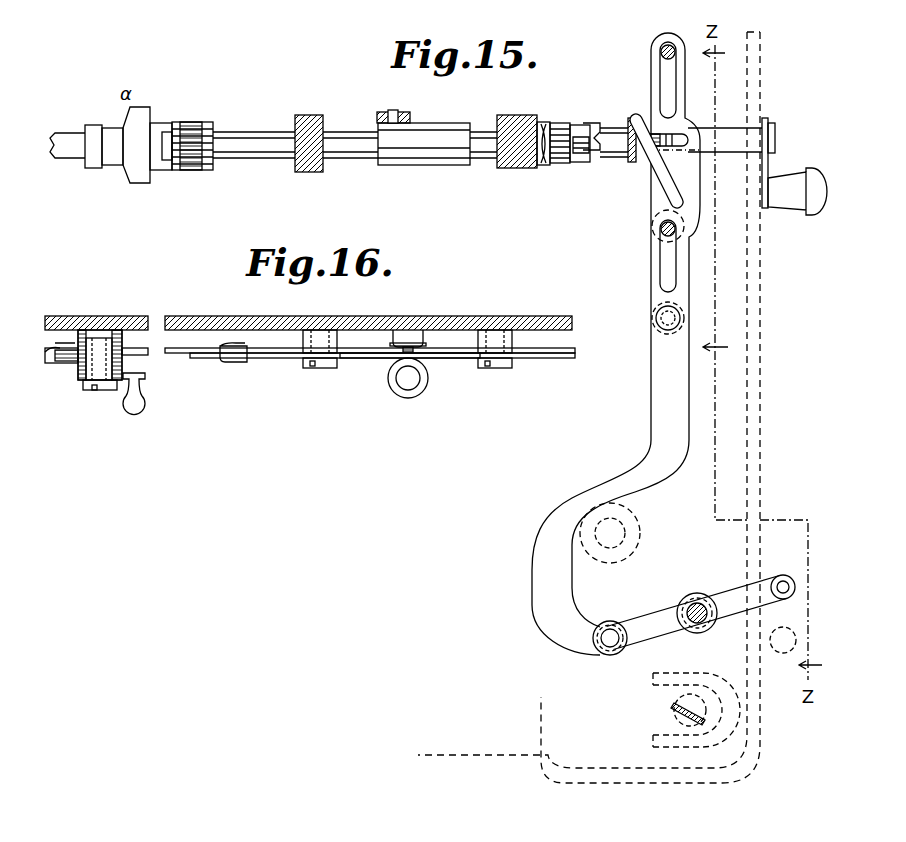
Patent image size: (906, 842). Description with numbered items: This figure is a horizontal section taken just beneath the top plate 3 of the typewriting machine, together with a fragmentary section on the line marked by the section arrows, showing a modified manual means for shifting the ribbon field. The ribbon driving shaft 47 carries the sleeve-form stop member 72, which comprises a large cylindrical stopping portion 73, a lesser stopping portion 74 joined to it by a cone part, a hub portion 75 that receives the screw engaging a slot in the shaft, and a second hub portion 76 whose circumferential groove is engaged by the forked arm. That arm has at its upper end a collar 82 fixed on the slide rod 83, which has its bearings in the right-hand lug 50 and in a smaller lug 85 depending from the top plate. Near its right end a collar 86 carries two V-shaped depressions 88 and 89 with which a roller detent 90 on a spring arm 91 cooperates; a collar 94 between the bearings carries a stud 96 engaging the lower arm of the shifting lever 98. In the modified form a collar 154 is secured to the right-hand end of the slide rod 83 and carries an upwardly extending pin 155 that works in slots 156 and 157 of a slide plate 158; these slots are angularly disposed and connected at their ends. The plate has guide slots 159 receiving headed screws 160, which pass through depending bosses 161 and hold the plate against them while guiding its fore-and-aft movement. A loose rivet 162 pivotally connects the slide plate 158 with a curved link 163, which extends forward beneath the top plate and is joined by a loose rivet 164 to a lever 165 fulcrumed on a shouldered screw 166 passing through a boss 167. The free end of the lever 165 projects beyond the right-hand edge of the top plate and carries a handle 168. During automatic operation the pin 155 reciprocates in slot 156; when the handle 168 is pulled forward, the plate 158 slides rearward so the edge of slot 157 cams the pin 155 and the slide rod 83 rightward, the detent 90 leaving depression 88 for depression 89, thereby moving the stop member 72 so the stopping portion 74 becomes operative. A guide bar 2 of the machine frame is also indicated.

In FIG. 15, the guide bar 2 is at (720, 730).
In FIG. 15, the frame 3 is at (761, 353).
In FIG. 16, the frame 3 is at (512, 316).
In FIG. 15, the ribbon driving shaft 47 is at (68, 157).
In FIG. 15, the right-hand lug 50 is at (514, 115).
In FIG. 15, the stop member 72 is at (158, 170).
In FIG. 15, the cylindrical stopping portion 73 is at (140, 183).
In FIG. 15, the lesser cylindrical stopping portion 74 is at (113, 165).
In FIG. 15, the hub portion 75 is at (92, 168).
In FIG. 15, the second hub portion 76 is at (158, 123).
In FIG. 15, the collar 82 is at (195, 126).
In FIG. 15, the slide rod 83 is at (253, 158).
In FIG. 16, the slide rod 83 is at (402, 386).
In FIG. 15, the lug 85 is at (309, 172).
In FIG. 15, the collar 86 is at (560, 163).
In FIG. 15, the V-shaped depression 88 is at (578, 162).
In FIG. 15, the V-shaped depression 89 is at (544, 166).
In FIG. 15, the roller detent 90 is at (572, 137).
In FIG. 15, the spring arm 91 is at (597, 125).
In FIG. 16, the spring arm 91 is at (404, 343).
In FIG. 15, the collar 94 is at (425, 165).
In FIG. 15, the pin or stud 96 is at (394, 110).
In FIG. 15, the shifting member 98 is at (412, 116).
In FIG. 15, the collar 154 is at (630, 156).
In FIG. 16, the collar 154 is at (424, 386).
In FIG. 15, the pin or stud 155 is at (643, 134).
In FIG. 16, the pin or stud 155 is at (411, 347).
In FIG. 15, the slot 156 is at (686, 138).
In FIG. 15, the slot 157 is at (660, 178).
In FIG. 15, the slide plate 158 is at (655, 212).
In FIG. 16, the slide plate 158 is at (363, 358).
In FIG. 15, the guide slots 159 is at (670, 97).
In FIG. 15, the guiding and supporting screws 160 is at (668, 45).
In FIG. 16, the guiding and supporting screws 160 is at (320, 368).
In FIG. 15, the bosses 161 is at (660, 60).
In FIG. 16, the bosses 161 is at (337, 339).
In FIG. 15, the double headed pin or loose rivet 162 is at (656, 320).
In FIG. 16, the double headed pin or loose rivet 162 is at (232, 362).
In FIG. 15, the curved link 163 is at (603, 460).
In FIG. 16, the curved link 163 is at (200, 358).
In FIG. 15, the loose rivet 164 is at (610, 647).
In FIG. 16, the loose rivet 164 is at (66, 370).
In FIG. 15, the lever 165 is at (648, 614).
In FIG. 16, the lever 165 is at (50, 362).
In FIG. 15, the shouldered screw 166 is at (697, 624).
In FIG. 16, the shouldered screw 166 is at (99, 390).
In FIG. 15, the boss 167 is at (695, 596).
In FIG. 16, the boss 167 is at (118, 340).
In FIG. 15, the handle or finger piece 168 is at (795, 587).
In FIG. 16, the handle or finger piece 168 is at (136, 412).